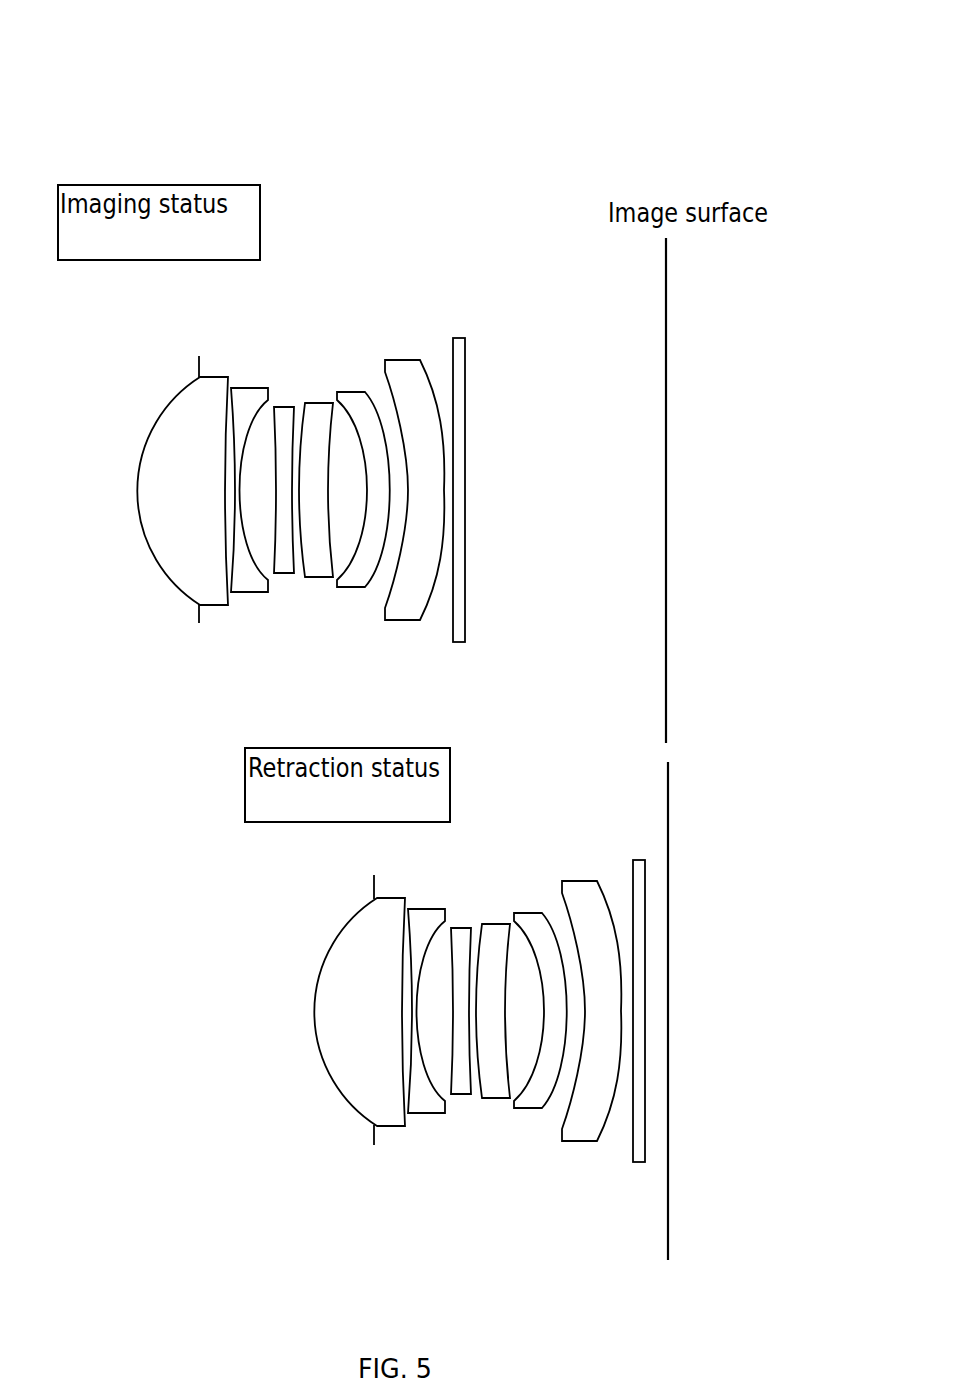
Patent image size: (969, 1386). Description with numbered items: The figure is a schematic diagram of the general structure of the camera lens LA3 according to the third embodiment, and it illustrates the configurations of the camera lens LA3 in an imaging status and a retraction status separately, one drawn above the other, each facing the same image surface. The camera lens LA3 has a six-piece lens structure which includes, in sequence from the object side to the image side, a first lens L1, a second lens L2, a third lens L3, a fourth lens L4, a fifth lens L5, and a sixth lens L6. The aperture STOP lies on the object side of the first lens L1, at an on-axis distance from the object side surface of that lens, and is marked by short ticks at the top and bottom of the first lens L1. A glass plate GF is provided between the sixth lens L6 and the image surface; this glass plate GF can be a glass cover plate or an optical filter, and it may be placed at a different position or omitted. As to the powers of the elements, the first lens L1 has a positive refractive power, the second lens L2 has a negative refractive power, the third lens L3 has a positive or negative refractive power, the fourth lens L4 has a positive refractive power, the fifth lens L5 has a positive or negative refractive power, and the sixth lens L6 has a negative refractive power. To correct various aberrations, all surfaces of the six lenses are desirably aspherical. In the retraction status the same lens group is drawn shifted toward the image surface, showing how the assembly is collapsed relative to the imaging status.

The camera lens LA3 is at (380, 46).
The first lens L1 is at (184, 466).
The second lens L2 is at (249, 473).
The third lens L3 is at (287, 469).
The fourth lens L4 is at (316, 470).
The fifth lens L5 is at (363, 473).
The sixth lens L6 is at (414, 469).
The glass plate GF is at (463, 470).
The aperture STOP is at (183, 506).